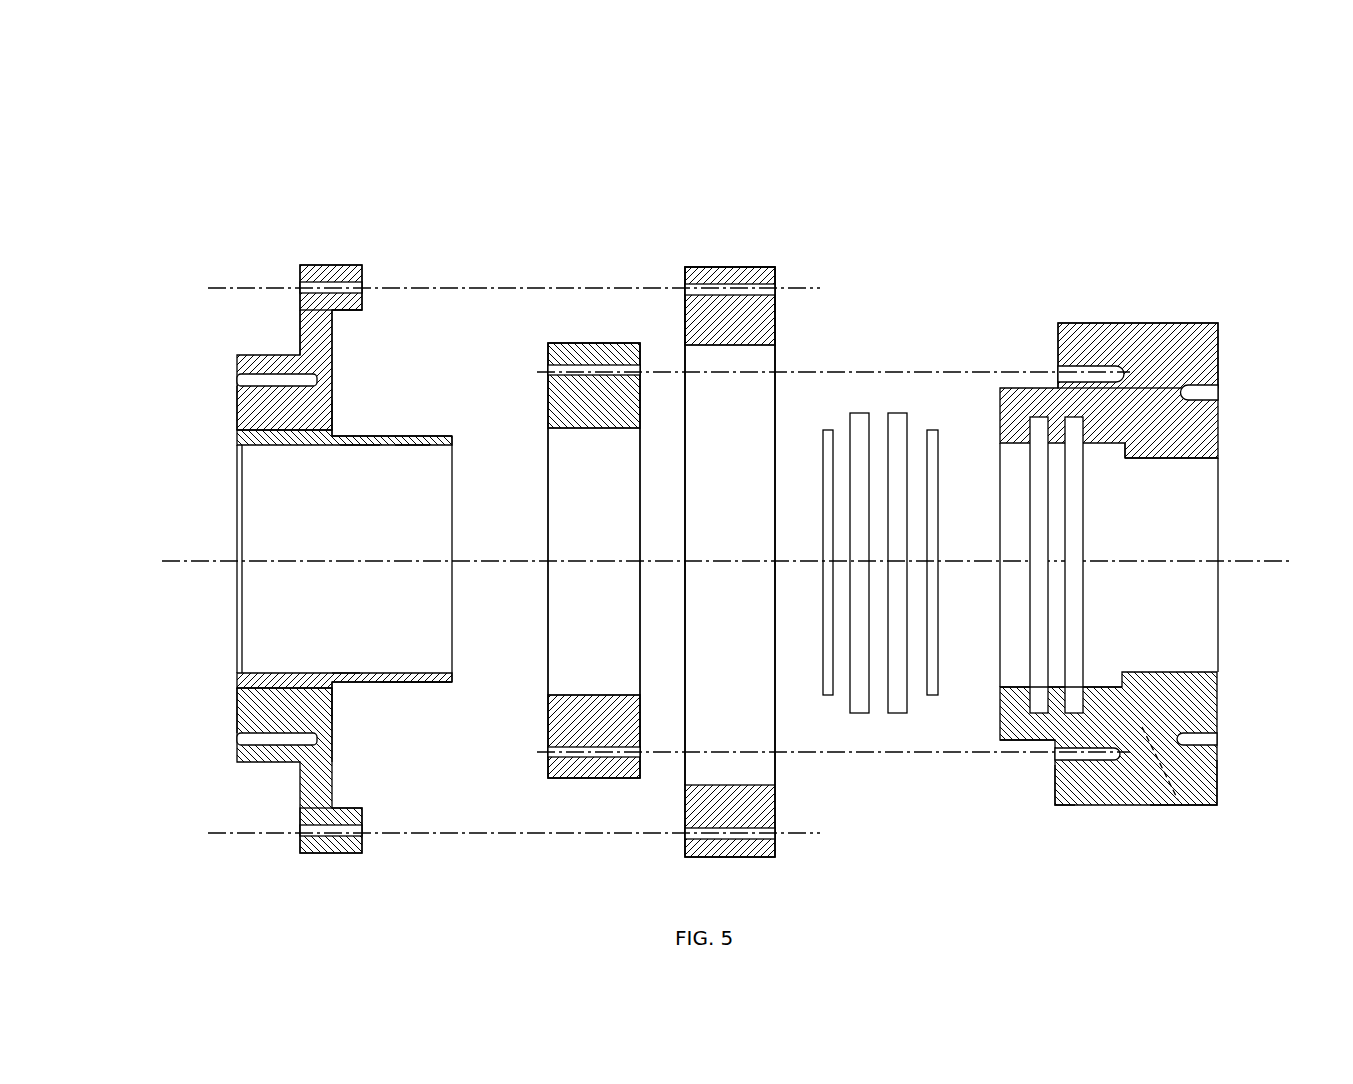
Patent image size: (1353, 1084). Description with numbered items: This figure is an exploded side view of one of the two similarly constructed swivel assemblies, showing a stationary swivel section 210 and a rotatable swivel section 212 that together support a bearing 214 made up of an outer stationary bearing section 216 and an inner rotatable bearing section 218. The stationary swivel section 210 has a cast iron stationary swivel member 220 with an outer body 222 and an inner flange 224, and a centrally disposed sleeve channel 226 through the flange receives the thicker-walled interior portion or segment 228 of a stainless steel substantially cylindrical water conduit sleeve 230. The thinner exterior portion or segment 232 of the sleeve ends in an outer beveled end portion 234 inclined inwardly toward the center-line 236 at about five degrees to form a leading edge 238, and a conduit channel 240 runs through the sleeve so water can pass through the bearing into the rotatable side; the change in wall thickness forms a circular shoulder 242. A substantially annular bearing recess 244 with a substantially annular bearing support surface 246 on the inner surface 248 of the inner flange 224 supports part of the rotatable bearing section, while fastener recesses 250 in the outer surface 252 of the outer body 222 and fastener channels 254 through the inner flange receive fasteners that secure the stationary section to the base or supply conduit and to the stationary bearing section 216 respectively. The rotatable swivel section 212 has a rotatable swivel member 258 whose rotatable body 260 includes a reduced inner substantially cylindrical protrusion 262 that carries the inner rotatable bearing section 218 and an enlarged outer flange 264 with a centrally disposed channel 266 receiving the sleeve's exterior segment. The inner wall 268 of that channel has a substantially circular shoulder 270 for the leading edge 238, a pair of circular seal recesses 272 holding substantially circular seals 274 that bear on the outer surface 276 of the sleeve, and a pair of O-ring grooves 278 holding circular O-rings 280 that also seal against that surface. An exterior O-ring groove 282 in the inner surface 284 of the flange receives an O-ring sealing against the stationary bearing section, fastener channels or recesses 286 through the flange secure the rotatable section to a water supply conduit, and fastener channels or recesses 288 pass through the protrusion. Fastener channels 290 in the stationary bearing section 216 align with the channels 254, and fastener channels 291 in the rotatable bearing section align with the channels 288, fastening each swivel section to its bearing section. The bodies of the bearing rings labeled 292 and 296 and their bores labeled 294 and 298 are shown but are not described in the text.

The stationary swivel section 210 is at (253, 218).
The rotatable swivel section 212 is at (1224, 195).
The bearing 214 is at (583, 190).
The outer stationary bearing section 216 is at (707, 263).
The inner rotatable bearing section 218 is at (568, 343).
The stationary swivel member 220 is at (298, 330).
The outer body 222 is at (273, 762).
The inner flange 224 is at (337, 265).
The sleeve channel 226 is at (238, 702).
The interior portion or segment 228 is at (245, 443).
The substantially cylindrical water conduit sleeve 230 is at (357, 447).
The exterior portion or segment 232 is at (407, 447).
The outer beveled end portion 234 is at (455, 438).
The center-line 236 is at (198, 567).
The leading edge 238 is at (453, 450).
The conduit channel 240 is at (258, 644).
The circular shoulder 242 is at (343, 678).
The substantially annular bearing recess 244 is at (343, 375).
The substantially annular bearing support surface 246 is at (331, 407).
The inner surface 248 is at (365, 311).
The fastener recesses 250 is at (238, 376).
The outer surface 252 is at (238, 409).
The fastener channels 254 is at (365, 278).
The rotatable swivel member 258 is at (1142, 305).
The rotatable body 260 is at (1180, 802).
The reduced inner substantially cylindrical protrusion 262 is at (1047, 740).
The enlarged outer flange 264 is at (1217, 793).
The centrally disposed channel 266 is at (1196, 535).
The inner wall 268 is at (1160, 461).
The substantially circular shoulder 270 is at (1124, 459).
The circular seal recesses 272 is at (1028, 707).
The substantially circular seal 274 is at (860, 413).
The outer surface 276 is at (413, 683).
The O-ring grooves 278 is at (1007, 448).
The circular O-ring 280 is at (825, 430).
The exterior O-ring groove 282 is at (1057, 802).
The inner surface 284 is at (1055, 783).
The fastener channels or recesses 286 is at (1202, 392).
The fastener channels or recesses 288 is at (1060, 370).
The fastener channels 290 is at (700, 285).
The fastener channels 291 is at (594, 365).
The outer ring body 292 is at (747, 270).
The outer ring bore 294 is at (737, 742).
The inner ring lower body 296 is at (595, 782).
The inner ring bore 298 is at (565, 628).